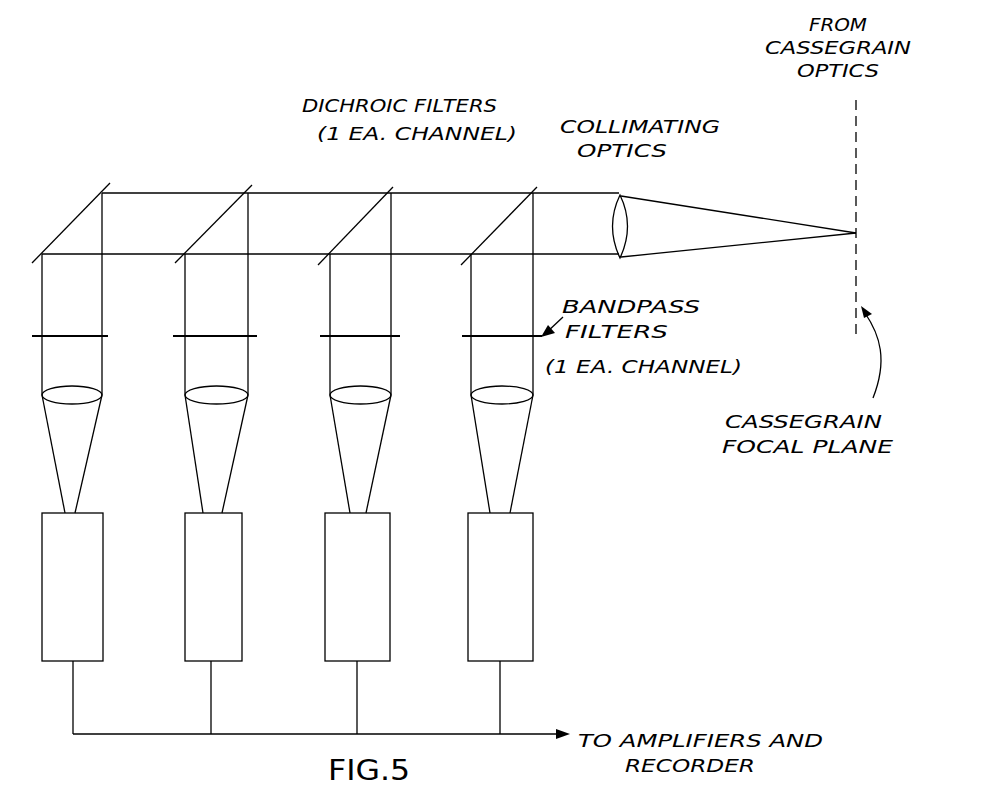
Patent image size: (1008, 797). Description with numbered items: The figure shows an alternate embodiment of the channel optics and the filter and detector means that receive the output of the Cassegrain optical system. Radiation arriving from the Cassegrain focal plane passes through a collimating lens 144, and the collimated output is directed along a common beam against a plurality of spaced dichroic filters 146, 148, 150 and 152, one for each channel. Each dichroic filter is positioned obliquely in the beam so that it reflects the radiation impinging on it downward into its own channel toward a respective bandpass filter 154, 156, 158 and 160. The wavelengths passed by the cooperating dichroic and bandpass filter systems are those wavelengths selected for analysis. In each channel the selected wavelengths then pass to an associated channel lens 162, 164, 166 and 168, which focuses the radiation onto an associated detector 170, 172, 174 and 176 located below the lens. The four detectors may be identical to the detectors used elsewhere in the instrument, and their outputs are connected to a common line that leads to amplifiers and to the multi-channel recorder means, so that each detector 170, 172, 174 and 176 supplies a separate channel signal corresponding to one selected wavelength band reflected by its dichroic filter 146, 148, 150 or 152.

The collimating lens 144 is at (632, 228).
The dichroic filter 146 is at (80, 212).
The dichroic filter 148 is at (218, 218).
The dichroic filter 150 is at (355, 226).
The dichroic filter 152 is at (505, 221).
The bandpass filter 154 is at (72, 337).
The bandpass filter 156 is at (205, 336).
The bandpass filter 158 is at (350, 336).
The bandpass filter 160 is at (490, 336).
The channel lens 162 is at (70, 405).
The channel lens 164 is at (213, 405).
The channel lens 166 is at (360, 405).
The channel lens 168 is at (505, 405).
The detector 170 is at (103, 590).
The detector 172 is at (242, 598).
The detector 174 is at (390, 598).
The detector 176 is at (533, 590).